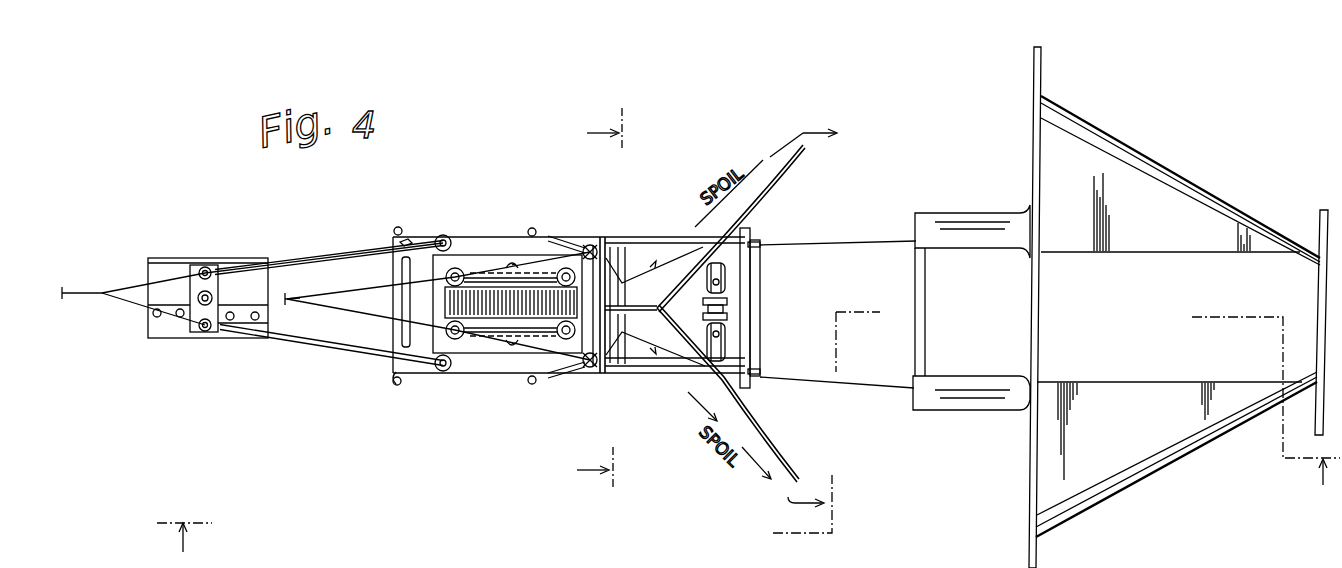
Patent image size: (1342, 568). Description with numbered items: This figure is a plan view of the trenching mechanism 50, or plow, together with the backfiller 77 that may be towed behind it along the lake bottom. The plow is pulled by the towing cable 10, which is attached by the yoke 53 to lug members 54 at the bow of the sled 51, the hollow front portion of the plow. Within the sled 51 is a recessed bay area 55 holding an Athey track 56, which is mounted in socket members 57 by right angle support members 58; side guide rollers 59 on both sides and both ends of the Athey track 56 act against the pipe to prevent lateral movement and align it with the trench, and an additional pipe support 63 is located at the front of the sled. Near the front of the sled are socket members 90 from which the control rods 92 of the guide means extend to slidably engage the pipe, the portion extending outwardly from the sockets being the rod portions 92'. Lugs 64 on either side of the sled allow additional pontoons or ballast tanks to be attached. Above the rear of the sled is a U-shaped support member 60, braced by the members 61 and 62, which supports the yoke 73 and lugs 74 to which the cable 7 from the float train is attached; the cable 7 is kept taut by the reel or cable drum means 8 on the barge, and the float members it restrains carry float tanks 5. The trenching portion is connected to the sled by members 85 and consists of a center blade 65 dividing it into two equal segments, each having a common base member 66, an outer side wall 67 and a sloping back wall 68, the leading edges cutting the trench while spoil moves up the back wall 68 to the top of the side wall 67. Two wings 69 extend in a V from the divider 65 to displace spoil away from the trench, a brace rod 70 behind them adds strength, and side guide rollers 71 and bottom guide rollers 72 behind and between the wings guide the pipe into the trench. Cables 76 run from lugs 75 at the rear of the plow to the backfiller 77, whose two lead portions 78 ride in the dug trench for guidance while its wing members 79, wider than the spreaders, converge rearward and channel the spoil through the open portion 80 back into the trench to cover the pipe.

The towing cable 10 is at (82, 292).
The outwardly extending portion of control rods 92' is at (239, 317).
The control rods 92 is at (204, 298).
The cable 7 is at (298, 297).
The yoke 53 is at (348, 362).
The lug members 54 is at (406, 240).
The lugs 64 is at (392, 231).
The socket members 90 is at (440, 235).
The yoke 73 is at (378, 283).
The pipe support 63 is at (400, 334).
The trenching mechanism 50 is at (478, 228).
The sled 51 is at (483, 240).
The side guide rollers 59 is at (456, 268).
The socket members 57 is at (510, 262).
The right angle support members 58 is at (505, 355).
The recessed bay area 55 is at (470, 352).
The Athey track 56 is at (550, 305).
The brace members 62 is at (548, 238).
The lugs 74 is at (589, 244).
The center blade 65 is at (613, 305).
The base member 66 is at (624, 283).
The sloping back wall 68 is at (640, 308).
The U-shaped support member 60 is at (613, 340).
The brace members 61 is at (600, 375).
The outer side wall 67 is at (636, 355).
The connecting members 85 is at (657, 382).
The brace rod 70 is at (750, 232).
The lugs 75 is at (753, 384).
The side guide rollers 71 is at (727, 272).
The bottom guide rollers 72 is at (728, 307).
The wings 69 is at (798, 173).
The cables 76 is at (882, 242).
The lead portions 78 is at (937, 376).
The backfiller 77 is at (1178, 154).
The wing members 79 is at (1210, 190).
The open portion 80 is at (1142, 323).
The reel or cable drum means 8 is at (1332, 187).
The float tanks 5 is at (748, 440).